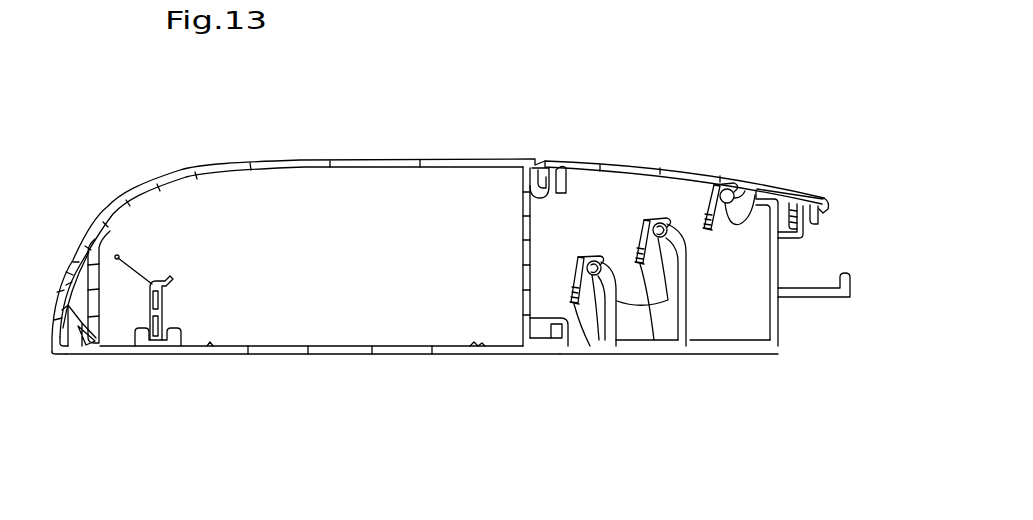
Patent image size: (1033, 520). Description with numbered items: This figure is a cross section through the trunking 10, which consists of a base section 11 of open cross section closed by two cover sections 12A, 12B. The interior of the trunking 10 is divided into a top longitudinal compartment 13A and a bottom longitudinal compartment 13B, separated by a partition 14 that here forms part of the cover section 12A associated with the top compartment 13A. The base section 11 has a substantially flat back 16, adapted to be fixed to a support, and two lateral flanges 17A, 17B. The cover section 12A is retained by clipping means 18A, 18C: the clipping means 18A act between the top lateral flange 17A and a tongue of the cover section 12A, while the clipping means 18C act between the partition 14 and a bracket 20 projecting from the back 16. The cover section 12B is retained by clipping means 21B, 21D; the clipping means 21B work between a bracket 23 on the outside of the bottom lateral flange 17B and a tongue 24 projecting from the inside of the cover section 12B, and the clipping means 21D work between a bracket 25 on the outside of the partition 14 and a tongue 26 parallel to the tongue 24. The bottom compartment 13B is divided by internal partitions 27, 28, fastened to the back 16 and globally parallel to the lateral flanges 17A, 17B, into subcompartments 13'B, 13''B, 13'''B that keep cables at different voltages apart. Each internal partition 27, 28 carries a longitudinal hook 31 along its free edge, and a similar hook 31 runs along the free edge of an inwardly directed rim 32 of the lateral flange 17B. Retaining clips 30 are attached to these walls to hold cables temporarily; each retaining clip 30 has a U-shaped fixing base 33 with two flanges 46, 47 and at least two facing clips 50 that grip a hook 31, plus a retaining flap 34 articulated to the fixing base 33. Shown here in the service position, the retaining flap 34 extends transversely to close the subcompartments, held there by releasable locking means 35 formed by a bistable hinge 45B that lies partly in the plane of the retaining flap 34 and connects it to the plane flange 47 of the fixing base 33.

The trunking 10 is at (357, 388).
The base section 11 is at (427, 360).
The cover section 12A is at (316, 156).
The cover section 12B is at (643, 164).
The top longitudinal compartment 13A is at (388, 194).
The bottom longitudinal compartment 13B is at (752, 286).
The subcompartment 13'B is at (792, 291).
The subcompartment 13''B is at (680, 319).
The subcompartment 13'''B is at (636, 354).
The partition 14 is at (524, 257).
The back 16 is at (262, 355).
The top lateral flange 17A is at (50, 331).
The bottom lateral flange 17B is at (790, 274).
The clipping means 18A is at (84, 348).
The clipping means 18C is at (548, 358).
The bracket 20 is at (545, 311).
The clipping means 21B is at (838, 213).
The clipping means 21D is at (540, 156).
The bracket 23 is at (804, 236).
The tongue 24 is at (805, 190).
The bracket 25 is at (542, 199).
The tongue 26 is at (570, 168).
The internal partition 27 is at (692, 318).
The internal partition 28 is at (647, 321).
The retaining clip 30 is at (568, 294).
The longitudinal hook 31 is at (579, 255).
The inwardly directed rim 32 is at (775, 189).
The fixing base 33 is at (672, 302).
The retaining flap 34 is at (574, 306).
The releasable locking means 35 is at (572, 254).
The bistable hinge 45B is at (563, 255).
The flange 46 is at (588, 338).
The plane flange 47 is at (600, 258).
The clip 50 is at (753, 257).